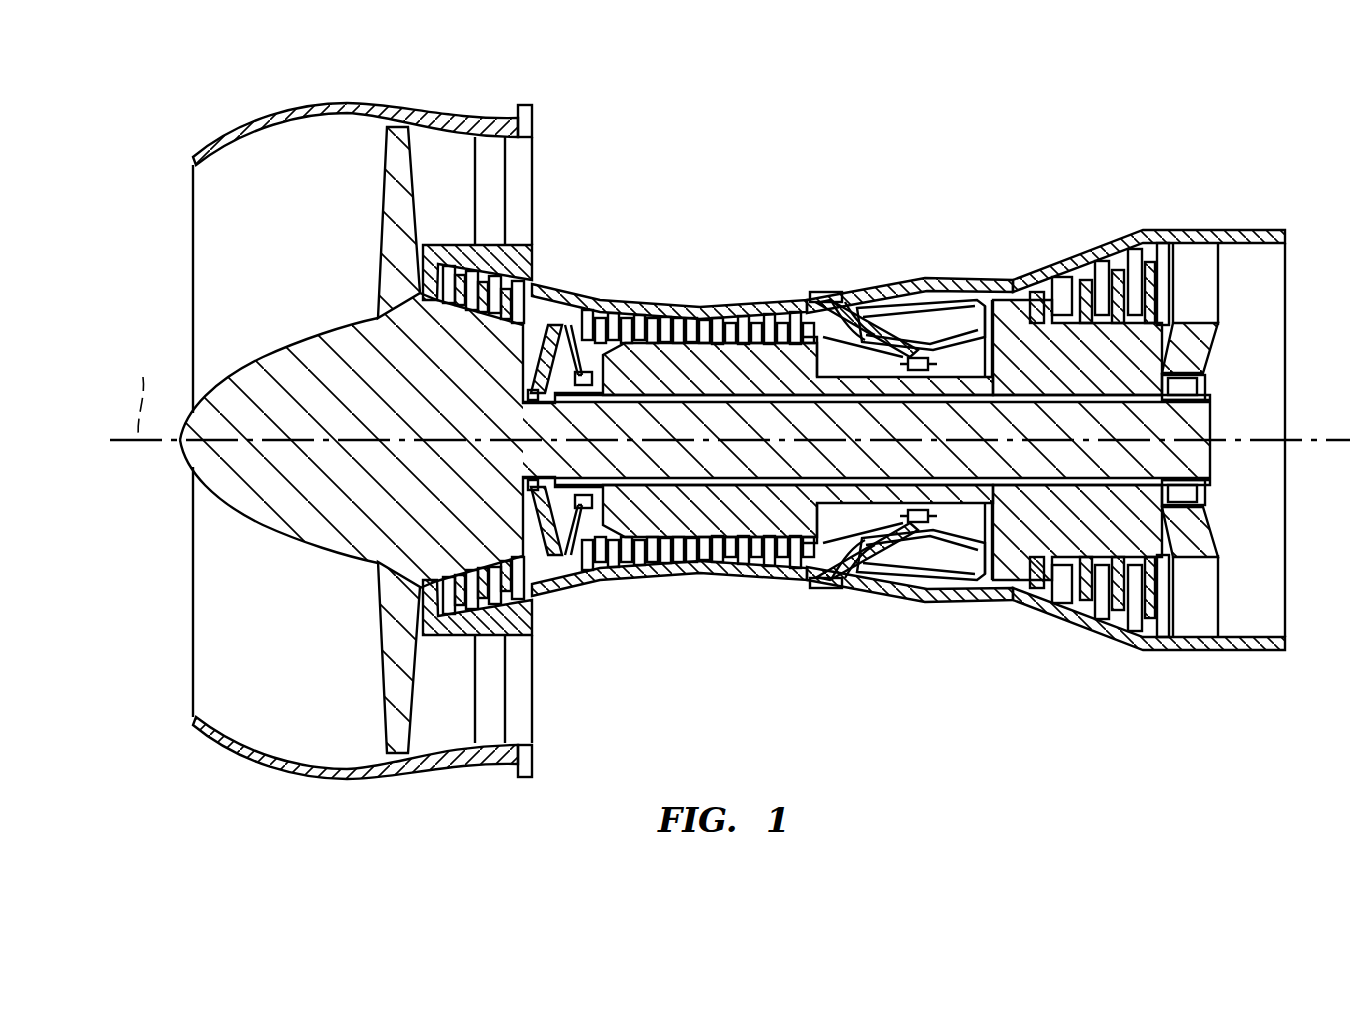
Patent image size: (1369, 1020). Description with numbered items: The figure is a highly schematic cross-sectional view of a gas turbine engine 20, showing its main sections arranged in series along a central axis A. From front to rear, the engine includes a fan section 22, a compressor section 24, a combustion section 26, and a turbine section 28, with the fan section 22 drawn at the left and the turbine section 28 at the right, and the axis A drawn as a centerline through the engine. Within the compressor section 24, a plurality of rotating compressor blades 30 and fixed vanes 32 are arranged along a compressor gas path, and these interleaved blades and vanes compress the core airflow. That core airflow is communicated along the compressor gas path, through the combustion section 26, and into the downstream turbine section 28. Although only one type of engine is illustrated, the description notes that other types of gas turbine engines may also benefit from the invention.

The gas turbine engine 20 is at (862, 110).
The fan section 22 is at (358, 213).
The compressor section 24 is at (800, 297).
The combustion section 26 is at (807, 297).
The turbine section 28 is at (990, 283).
The compressor blades 30 is at (703, 312).
The fixed vanes 32 is at (722, 328).